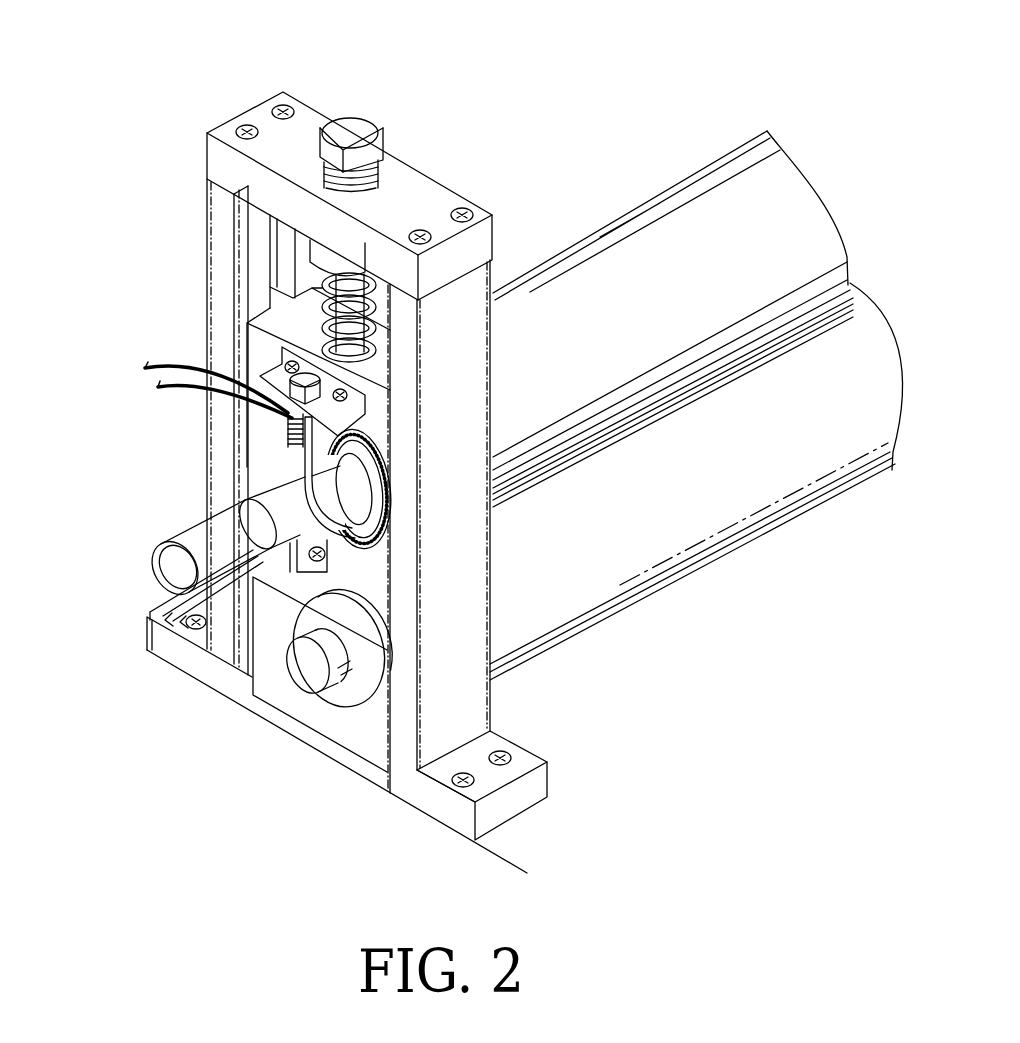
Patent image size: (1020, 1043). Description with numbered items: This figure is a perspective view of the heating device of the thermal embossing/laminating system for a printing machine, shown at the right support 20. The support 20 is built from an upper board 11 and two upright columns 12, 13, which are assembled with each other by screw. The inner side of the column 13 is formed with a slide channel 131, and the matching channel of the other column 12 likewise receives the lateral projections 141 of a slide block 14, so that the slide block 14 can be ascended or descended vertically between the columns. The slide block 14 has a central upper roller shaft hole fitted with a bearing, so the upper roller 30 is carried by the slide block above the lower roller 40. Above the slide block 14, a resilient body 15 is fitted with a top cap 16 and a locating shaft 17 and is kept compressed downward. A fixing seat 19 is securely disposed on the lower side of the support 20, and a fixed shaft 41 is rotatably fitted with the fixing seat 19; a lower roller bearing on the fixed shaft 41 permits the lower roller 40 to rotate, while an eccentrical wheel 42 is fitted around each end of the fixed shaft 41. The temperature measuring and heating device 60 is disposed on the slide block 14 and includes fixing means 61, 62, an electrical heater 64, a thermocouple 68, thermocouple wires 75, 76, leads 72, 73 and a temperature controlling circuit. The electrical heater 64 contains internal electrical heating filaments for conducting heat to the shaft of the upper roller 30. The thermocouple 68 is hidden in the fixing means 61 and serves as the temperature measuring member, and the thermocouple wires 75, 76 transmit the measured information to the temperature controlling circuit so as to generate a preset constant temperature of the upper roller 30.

The upper board 11 is at (427, 190).
The upright column 12 is at (478, 595).
The upright column 13 is at (227, 238).
The slide channel 131 is at (270, 270).
The slide block 14 is at (257, 432).
The lateral projection 141 is at (276, 295).
The resilient body 15 is at (372, 275).
The top cap 16 is at (387, 167).
The locating shaft 17 is at (347, 120).
The fixing seat 19 is at (273, 683).
The right support 20 is at (173, 285).
The upper roller 30 is at (800, 190).
The lower roller 40 is at (757, 477).
The fixed shaft 41 is at (305, 663).
The eccentrical wheel 42 is at (347, 703).
The heating device 60 is at (390, 480).
The fixing means 61 is at (273, 413).
The fixing means 62 is at (370, 547).
The electrical heater 64 is at (273, 497).
The thermocouple 68 is at (283, 436).
The lead 72 is at (170, 600).
The lead 73 is at (177, 615).
The thermocouple wire 75 is at (160, 370).
The thermocouple wire 76 is at (185, 385).